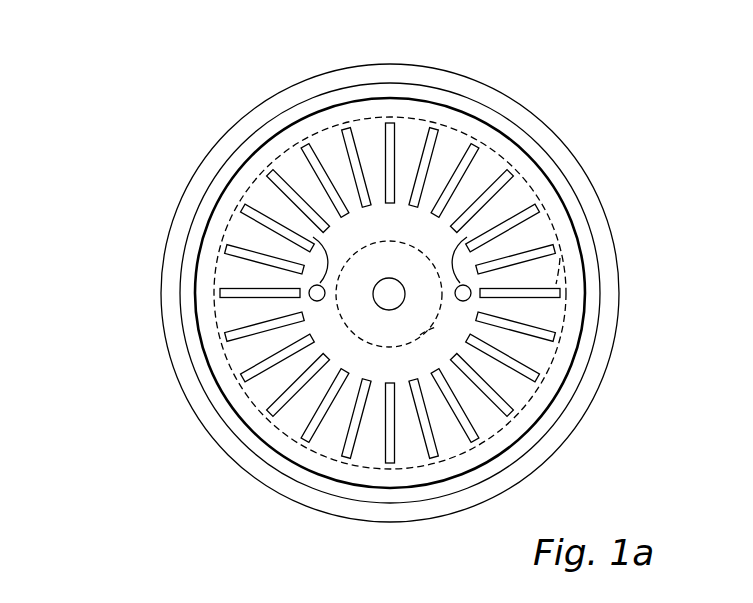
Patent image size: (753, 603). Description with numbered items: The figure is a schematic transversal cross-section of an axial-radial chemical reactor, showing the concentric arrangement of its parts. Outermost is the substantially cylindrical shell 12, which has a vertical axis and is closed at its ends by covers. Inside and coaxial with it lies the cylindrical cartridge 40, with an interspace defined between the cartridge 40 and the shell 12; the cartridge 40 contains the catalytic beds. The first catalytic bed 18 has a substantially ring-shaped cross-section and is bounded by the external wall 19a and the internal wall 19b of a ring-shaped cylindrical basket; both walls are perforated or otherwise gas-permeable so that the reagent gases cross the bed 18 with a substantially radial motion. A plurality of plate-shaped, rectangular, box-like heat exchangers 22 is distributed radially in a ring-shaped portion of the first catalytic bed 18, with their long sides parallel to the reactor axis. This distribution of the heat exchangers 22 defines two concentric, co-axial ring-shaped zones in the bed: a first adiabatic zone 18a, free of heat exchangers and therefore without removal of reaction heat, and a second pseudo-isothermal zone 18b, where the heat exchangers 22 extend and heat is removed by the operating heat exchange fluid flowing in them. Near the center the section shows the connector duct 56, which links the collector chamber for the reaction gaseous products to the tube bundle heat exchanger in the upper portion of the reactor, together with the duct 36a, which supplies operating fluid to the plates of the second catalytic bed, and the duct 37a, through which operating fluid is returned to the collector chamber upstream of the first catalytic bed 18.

The shell 12 is at (478, 96).
The cartridge 40 is at (403, 97).
The connector duct 56 is at (388, 278).
The duct 37a is at (313, 237).
The duct 36a is at (467, 237).
The heat exchangers 22 is at (277, 232).
The first catalytic bed 18 is at (563, 276).
The first adiabatic zone 18a is at (443, 339).
The second pseudo-isothermal zone 18b is at (517, 317).
The external wall 19a is at (217, 360).
The internal wall 19b is at (349, 338).